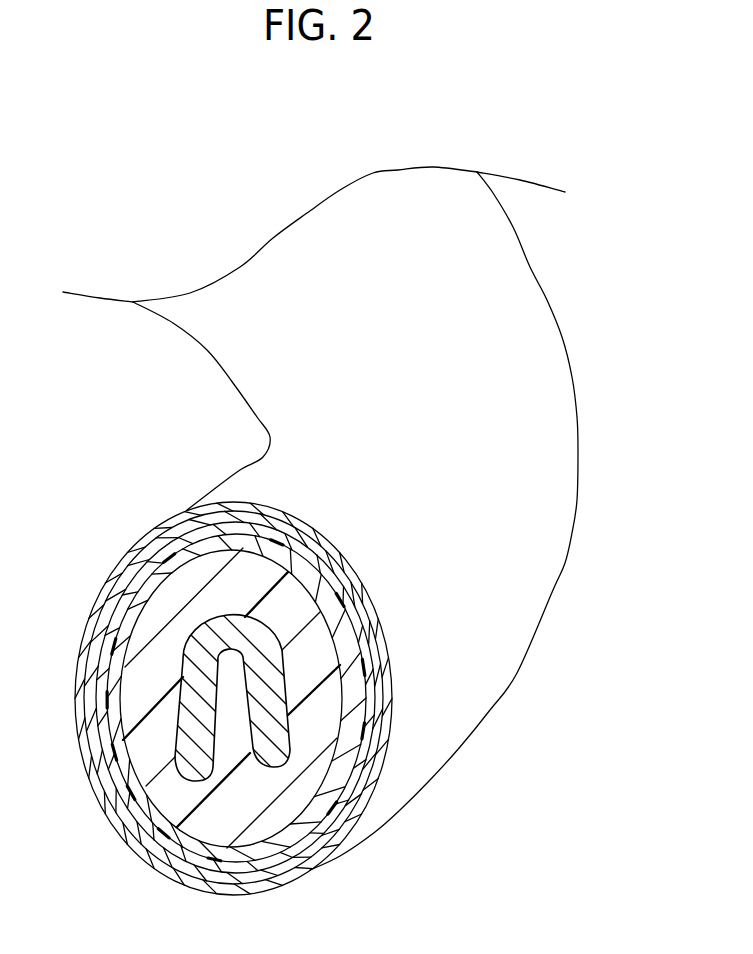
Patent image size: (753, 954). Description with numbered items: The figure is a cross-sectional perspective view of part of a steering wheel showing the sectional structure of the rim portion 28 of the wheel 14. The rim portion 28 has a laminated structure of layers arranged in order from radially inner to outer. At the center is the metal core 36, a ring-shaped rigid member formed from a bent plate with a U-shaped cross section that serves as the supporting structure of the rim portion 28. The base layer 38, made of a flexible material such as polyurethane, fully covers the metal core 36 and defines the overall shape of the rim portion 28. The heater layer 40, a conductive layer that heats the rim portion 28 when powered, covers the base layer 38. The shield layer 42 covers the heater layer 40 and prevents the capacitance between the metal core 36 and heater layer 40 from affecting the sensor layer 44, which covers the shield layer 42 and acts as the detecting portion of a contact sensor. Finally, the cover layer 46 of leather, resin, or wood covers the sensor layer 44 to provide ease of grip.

The rim portion 28 is at (207, 453).
The wheel 14 is at (320, 518).
The metal core 36 is at (227, 612).
The base layer 38 is at (132, 675).
The heater layer 40 is at (337, 552).
The shield layer 42 is at (357, 590).
The sensor layer 44 is at (382, 635).
The cover layer 46 is at (387, 673).